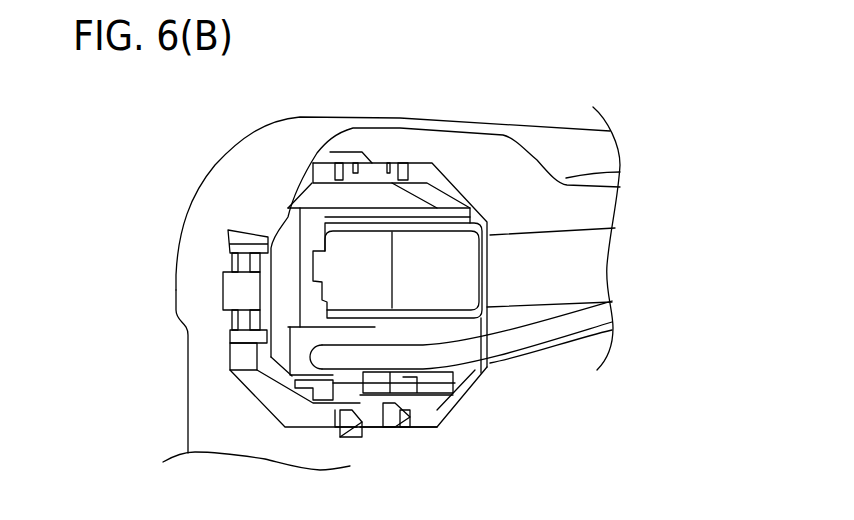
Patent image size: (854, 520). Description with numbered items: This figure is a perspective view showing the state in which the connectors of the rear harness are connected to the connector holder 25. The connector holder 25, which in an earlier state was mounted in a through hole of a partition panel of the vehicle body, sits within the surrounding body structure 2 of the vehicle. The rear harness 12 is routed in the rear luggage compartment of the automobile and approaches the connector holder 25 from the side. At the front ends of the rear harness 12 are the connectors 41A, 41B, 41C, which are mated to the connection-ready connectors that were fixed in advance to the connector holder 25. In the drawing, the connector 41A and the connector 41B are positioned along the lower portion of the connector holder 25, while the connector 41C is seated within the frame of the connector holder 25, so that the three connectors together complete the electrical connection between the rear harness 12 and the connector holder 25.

The housing 2 is at (213, 407).
The rear harness 12 is at (565, 243).
The connector holder 25 is at (453, 197).
The connector 41A is at (335, 375).
The connector 41B is at (405, 372).
The connector 41C is at (447, 275).